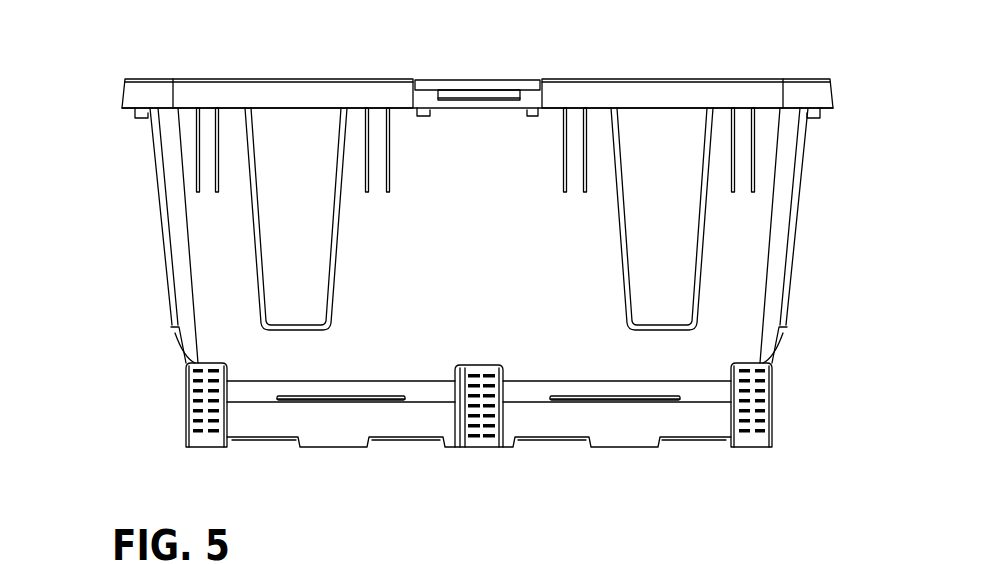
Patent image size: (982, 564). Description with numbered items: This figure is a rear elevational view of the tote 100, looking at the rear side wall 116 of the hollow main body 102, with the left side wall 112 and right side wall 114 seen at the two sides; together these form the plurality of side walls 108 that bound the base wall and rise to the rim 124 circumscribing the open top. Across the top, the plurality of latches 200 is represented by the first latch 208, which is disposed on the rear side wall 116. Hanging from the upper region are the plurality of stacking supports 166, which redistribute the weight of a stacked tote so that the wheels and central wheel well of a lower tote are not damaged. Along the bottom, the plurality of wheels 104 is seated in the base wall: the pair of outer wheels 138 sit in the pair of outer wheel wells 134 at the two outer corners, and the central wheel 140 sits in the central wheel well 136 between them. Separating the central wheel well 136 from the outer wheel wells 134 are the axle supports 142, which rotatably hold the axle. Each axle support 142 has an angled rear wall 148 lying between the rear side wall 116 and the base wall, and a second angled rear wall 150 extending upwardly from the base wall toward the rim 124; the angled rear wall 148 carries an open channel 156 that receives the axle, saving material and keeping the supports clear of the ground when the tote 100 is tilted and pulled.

The tote 100 is at (72, 65).
The rim 124 is at (136, 79).
The hollow main body 102 is at (725, 70).
The plurality of latches 200 is at (477, 80).
The first latch 208 is at (477, 68).
The plurality of stacking supports 166 is at (188, 178).
The plurality of side walls 108 is at (162, 248).
The right side wall 114 is at (131, 235).
The rear side wall 116 is at (479, 219).
The left side wall 112 is at (823, 235).
The pair of outer wheel wells 134 is at (204, 363).
The central wheel well 136 is at (478, 363).
The central wheel 140 is at (499, 387).
The plurality of wheels 104 is at (487, 383).
The pair of outer wheels 138 is at (473, 405).
The axle supports 142 is at (258, 370).
The angled rear wall 148 is at (330, 390).
The open channel 156 is at (380, 397).
The second angled rear wall 150 is at (330, 428).